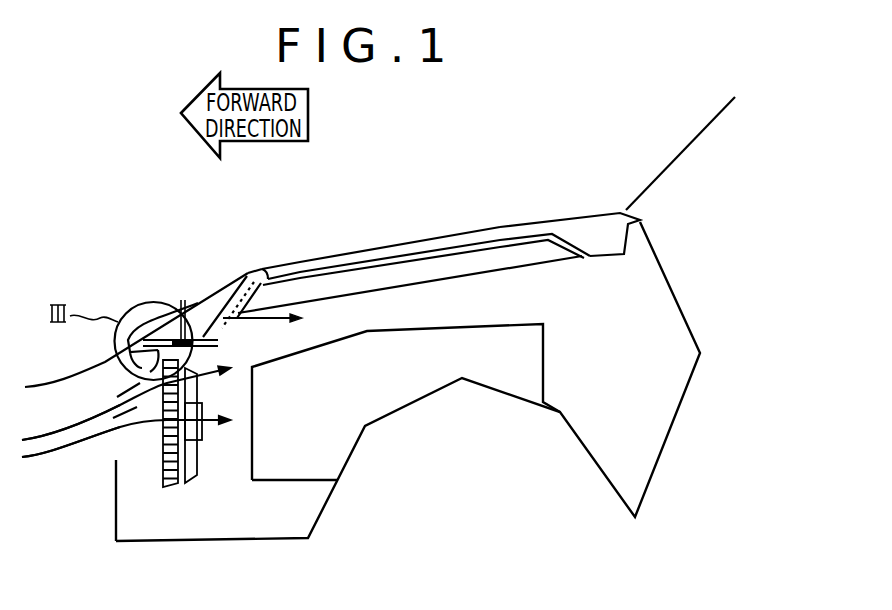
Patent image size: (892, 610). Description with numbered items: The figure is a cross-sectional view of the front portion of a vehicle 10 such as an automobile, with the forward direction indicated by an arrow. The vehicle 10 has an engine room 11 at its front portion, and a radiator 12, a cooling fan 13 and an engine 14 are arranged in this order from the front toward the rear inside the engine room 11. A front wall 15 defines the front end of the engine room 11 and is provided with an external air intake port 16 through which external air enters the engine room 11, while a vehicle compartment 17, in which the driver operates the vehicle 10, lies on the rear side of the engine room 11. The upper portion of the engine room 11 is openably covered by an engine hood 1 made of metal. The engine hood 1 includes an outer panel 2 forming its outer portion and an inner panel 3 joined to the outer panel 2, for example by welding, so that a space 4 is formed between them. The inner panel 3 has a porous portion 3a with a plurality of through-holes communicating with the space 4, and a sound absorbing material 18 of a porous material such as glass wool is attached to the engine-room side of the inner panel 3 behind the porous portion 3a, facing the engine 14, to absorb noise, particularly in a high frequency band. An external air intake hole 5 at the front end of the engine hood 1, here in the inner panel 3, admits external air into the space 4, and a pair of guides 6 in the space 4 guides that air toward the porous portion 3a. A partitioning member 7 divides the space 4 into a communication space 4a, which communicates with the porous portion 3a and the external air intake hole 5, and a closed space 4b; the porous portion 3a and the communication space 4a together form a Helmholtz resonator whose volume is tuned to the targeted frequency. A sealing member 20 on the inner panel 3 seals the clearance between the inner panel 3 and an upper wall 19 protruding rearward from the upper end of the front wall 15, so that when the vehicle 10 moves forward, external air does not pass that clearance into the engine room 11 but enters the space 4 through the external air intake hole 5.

The engine hood 1 is at (369, 223).
The outer panel 2 is at (497, 226).
The inner panel 3 is at (612, 256).
The porous portion 3a is at (218, 330).
The space 4 is at (328, 276).
The communication space 4a is at (128, 302).
The closed space 4b is at (432, 242).
The external air intake hole 5 is at (112, 362).
The guides 6 is at (215, 298).
The partitioning member 7 is at (261, 268).
The vehicle 10 is at (184, 227).
The engine room 11 is at (595, 408).
The radiator 12 is at (172, 490).
The cooling fan 13 is at (198, 465).
The engine 14 is at (408, 383).
The front wall 15 is at (115, 520).
The external air intake port 16 is at (128, 433).
The vehicle compartment 17 is at (673, 207).
The sound absorbing material 18 is at (518, 270).
The upper wall 19 is at (124, 381).
The sealing member 20 is at (155, 322).